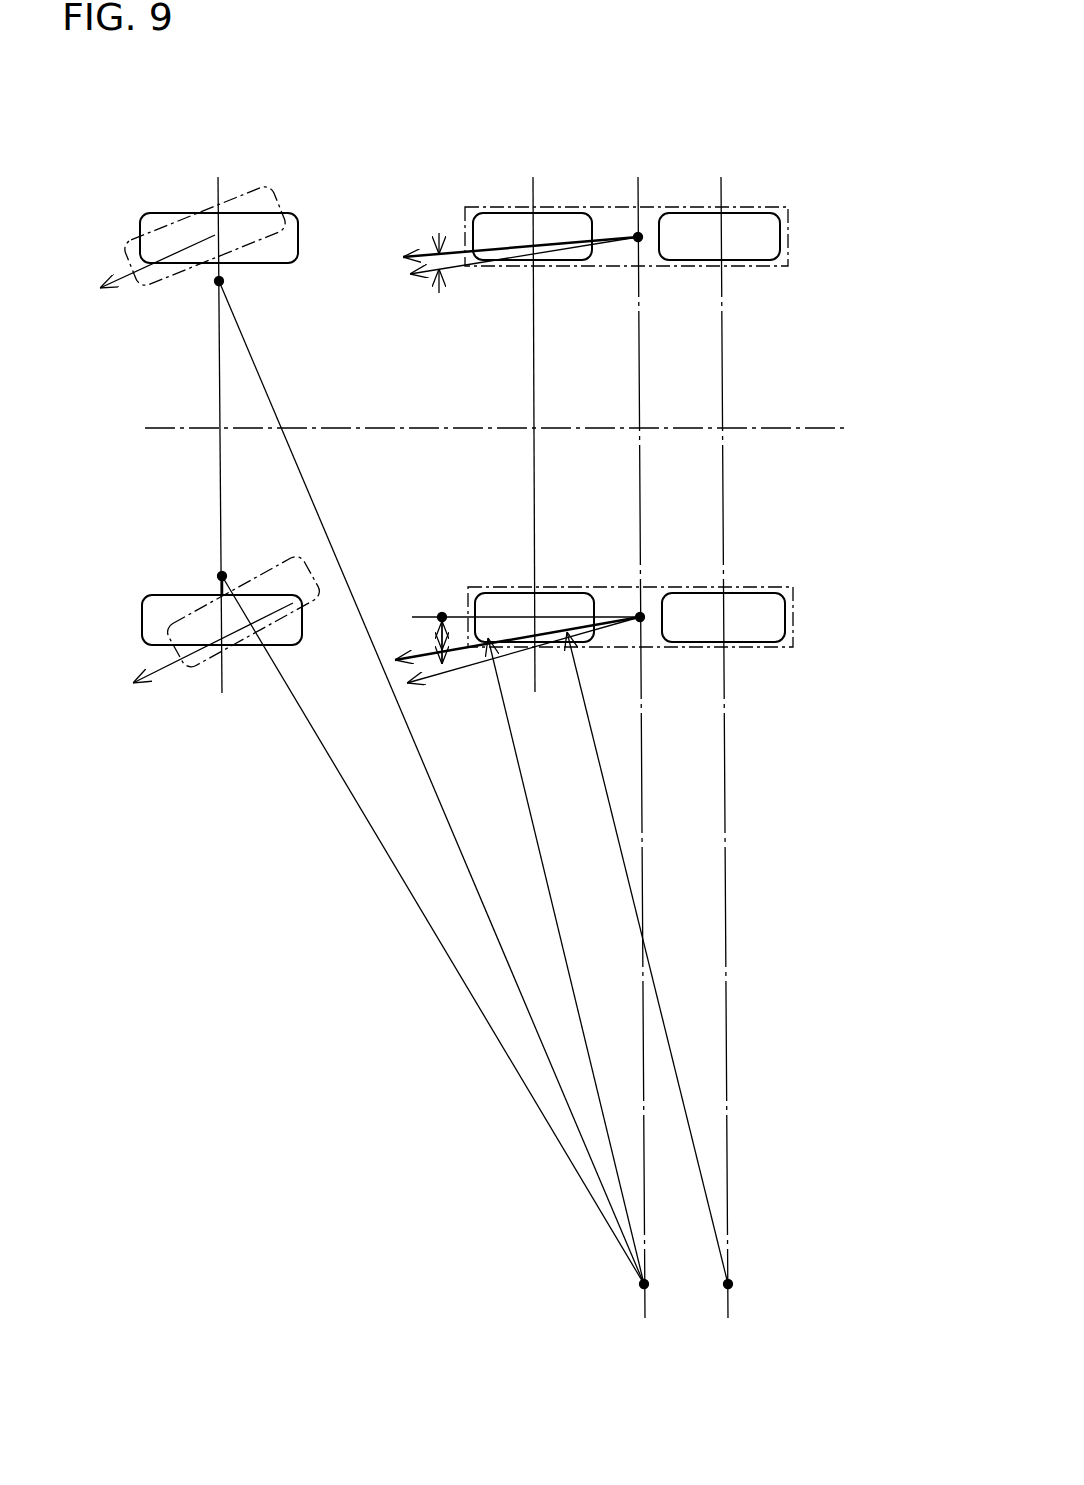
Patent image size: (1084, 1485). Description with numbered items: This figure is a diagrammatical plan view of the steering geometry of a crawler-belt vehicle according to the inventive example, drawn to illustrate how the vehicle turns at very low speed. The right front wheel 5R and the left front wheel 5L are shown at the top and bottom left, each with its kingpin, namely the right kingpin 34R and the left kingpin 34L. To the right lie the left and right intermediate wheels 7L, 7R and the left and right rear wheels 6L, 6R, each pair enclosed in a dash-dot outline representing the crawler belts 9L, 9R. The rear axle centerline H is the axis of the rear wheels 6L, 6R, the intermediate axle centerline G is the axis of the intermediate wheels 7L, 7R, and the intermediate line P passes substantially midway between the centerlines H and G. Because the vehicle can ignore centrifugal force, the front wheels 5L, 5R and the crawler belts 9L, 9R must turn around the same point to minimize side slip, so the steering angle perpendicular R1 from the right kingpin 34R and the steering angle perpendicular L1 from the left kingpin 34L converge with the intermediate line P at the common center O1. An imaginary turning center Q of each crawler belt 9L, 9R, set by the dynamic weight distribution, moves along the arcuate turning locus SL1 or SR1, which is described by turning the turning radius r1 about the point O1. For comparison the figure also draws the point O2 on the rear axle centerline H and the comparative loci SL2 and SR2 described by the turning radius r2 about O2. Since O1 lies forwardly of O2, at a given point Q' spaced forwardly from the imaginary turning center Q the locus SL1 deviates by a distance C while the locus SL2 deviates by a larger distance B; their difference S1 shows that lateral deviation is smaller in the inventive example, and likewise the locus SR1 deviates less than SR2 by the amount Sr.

The right front wheel 5R is at (162, 213).
The left front wheel 5L is at (142, 620).
The right kingpin 34R is at (225, 283).
The left kingpin 34L is at (220, 575).
The right rear wheel 6R is at (745, 223).
The left rear wheel 6L is at (747, 596).
The right intermediate wheel 7R is at (557, 223).
The left intermediate wheel 7L is at (553, 596).
The right crawler belt 9R is at (653, 205).
The left crawler belt 9L is at (793, 645).
The turning locus of the right crawler belt (inventive example) SR1 is at (498, 243).
The turning locus of the right crawler belt (comparative example) SR2 is at (452, 267).
The turning locus of the left crawler belt (inventive example) SL1 is at (500, 632).
The turning locus of the left crawler belt (comparative example) SL2 is at (465, 660).
The lateral deviation difference of the right crawler belt Sr is at (443, 242).
The lateral deviation difference of the left crawler belt S1 is at (445, 665).
The imaginary turning center Q is at (637, 427).
The given point Q' is at (426, 570).
The deviation distance of turning locus SL2 B is at (438, 641).
The deviation distance of turning locus SL1 C is at (444, 650).
The intermediate axle centerline G is at (533, 398).
The rear axle centerline H is at (722, 322).
The intermediate line P is at (643, 742).
The turning radius (inventive example) r1 is at (566, 961).
The turning radius (comparative example) r2 is at (647, 958).
The steering angle perpendicular of the left front wheel L1 is at (393, 865).
The steering angle perpendicular of the right front wheel R1 is at (502, 945).
The center of turn (inventive example) O1 is at (665, 1288).
The center of turn (comparative example) O2 is at (751, 1288).